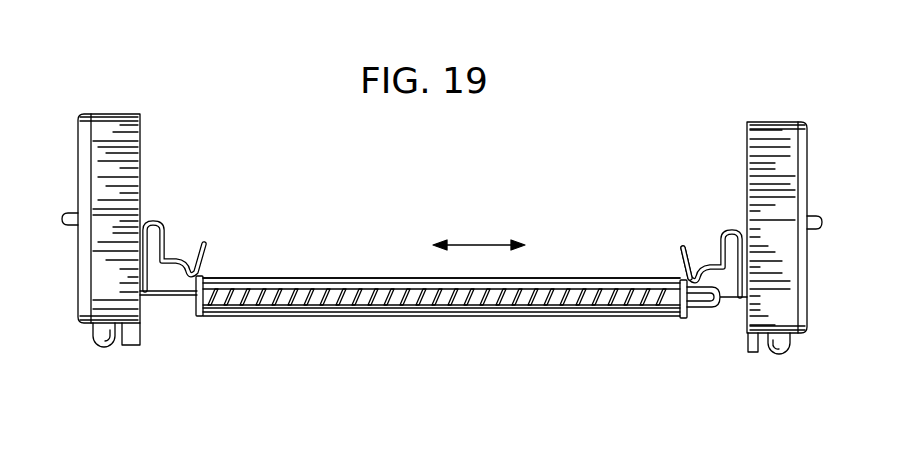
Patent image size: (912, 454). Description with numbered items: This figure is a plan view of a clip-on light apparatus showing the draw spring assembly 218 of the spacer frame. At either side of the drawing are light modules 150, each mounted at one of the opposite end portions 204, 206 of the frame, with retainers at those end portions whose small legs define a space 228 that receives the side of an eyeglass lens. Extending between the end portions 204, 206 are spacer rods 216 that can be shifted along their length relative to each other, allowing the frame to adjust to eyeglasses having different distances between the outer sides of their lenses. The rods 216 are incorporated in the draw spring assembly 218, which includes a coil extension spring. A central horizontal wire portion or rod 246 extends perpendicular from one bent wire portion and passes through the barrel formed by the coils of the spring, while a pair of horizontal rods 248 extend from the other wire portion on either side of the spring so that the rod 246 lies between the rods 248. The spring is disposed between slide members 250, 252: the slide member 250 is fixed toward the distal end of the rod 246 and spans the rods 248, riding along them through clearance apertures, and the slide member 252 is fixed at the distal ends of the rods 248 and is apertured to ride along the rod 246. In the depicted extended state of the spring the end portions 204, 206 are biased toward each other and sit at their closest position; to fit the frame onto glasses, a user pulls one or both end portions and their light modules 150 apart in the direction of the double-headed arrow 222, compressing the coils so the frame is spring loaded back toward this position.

The light module 150 is at (72, 100).
The end portion 204 is at (165, 318).
The end portion 206 is at (728, 330).
The spacer rod 216 is at (473, 320).
The draw spring assembly 218 is at (368, 252).
The double-headed arrow 222 is at (480, 245).
The space 228 is at (682, 270).
The rod 246 is at (305, 285).
The rods 248 is at (330, 315).
The slide member 250 is at (680, 320).
The slide member 252 is at (207, 277).